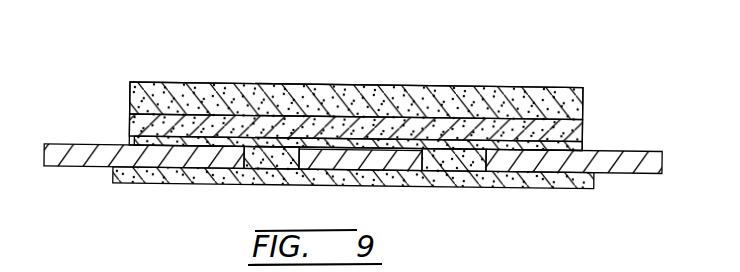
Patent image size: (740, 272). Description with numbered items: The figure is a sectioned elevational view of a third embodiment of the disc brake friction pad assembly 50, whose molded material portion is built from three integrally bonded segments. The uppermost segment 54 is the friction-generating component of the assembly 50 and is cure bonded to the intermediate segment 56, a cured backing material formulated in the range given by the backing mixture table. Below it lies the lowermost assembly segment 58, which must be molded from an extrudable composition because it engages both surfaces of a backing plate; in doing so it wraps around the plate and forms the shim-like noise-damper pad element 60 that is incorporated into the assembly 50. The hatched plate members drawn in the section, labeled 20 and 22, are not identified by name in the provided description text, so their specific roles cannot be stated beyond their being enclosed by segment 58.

The disc brake friction pad assembly 50 is at (586, 66).
The uppermost segment 54 is at (238, 92).
The intermediate segment 56 is at (366, 128).
The lowermost assembly segment 58 is at (480, 140).
The first lead 20 is at (250, 156).
The second lead 22 is at (460, 158).
The noise-damper pad element 60 is at (216, 180).